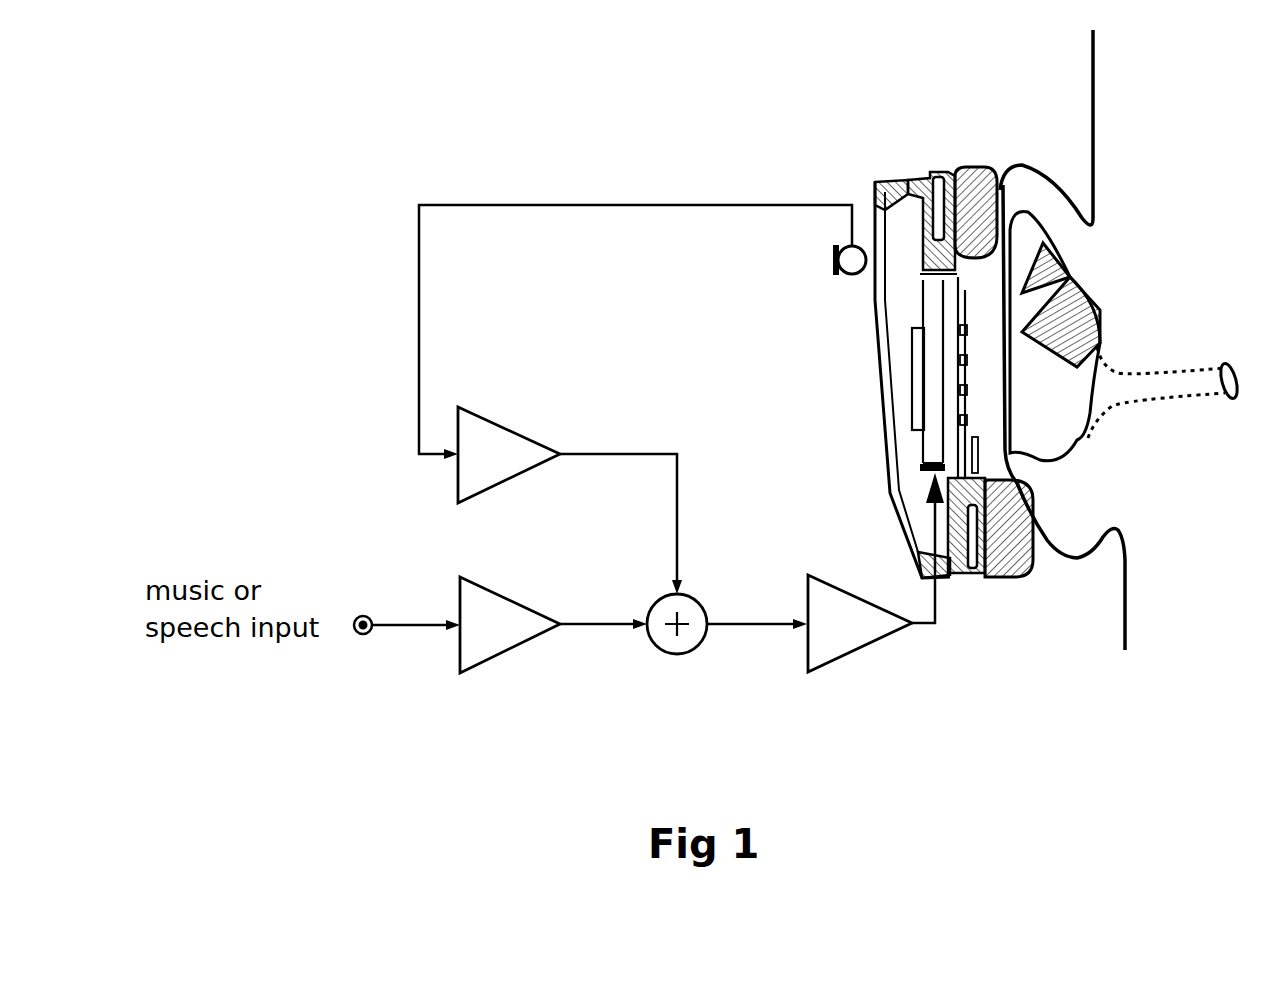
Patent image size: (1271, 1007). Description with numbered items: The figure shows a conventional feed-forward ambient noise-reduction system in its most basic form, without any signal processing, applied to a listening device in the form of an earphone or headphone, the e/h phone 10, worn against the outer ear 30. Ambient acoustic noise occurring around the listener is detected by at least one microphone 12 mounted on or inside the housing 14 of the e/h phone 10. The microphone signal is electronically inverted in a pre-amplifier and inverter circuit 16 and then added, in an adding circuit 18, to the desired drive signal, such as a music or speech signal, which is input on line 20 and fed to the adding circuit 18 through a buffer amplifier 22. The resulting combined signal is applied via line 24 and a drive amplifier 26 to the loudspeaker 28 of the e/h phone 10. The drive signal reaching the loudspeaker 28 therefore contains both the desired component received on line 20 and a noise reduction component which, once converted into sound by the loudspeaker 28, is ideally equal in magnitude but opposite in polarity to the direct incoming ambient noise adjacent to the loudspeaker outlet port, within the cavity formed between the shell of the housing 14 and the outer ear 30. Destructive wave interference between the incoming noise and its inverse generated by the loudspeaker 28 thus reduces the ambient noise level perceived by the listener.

The e/h phone 10 is at (880, 373).
The microphone 12 is at (827, 258).
The housing 14 is at (900, 522).
The pre-amplifier and inverter circuit 16 is at (495, 447).
The adding circuit 18 is at (680, 655).
The line 20 is at (393, 628).
The buffer amplifier 22 is at (500, 606).
The line 24 is at (747, 612).
The drive amplifier 26 is at (850, 626).
The loudspeaker 28 is at (925, 377).
The outer ear 30 is at (1028, 182).